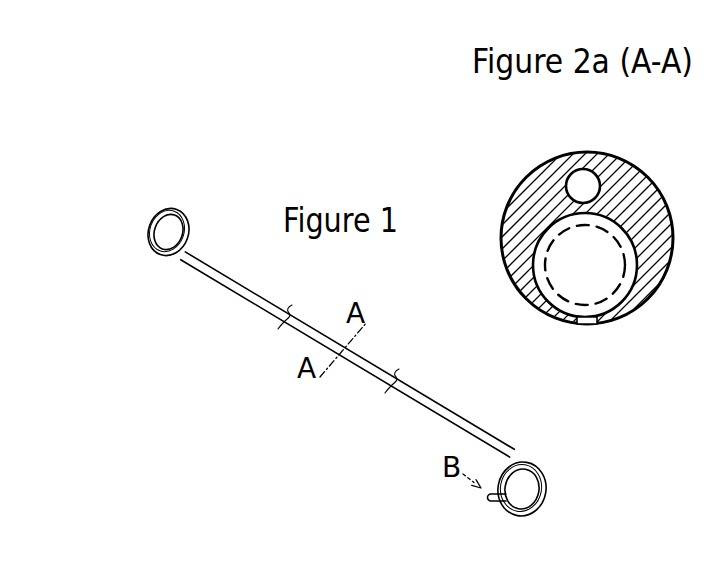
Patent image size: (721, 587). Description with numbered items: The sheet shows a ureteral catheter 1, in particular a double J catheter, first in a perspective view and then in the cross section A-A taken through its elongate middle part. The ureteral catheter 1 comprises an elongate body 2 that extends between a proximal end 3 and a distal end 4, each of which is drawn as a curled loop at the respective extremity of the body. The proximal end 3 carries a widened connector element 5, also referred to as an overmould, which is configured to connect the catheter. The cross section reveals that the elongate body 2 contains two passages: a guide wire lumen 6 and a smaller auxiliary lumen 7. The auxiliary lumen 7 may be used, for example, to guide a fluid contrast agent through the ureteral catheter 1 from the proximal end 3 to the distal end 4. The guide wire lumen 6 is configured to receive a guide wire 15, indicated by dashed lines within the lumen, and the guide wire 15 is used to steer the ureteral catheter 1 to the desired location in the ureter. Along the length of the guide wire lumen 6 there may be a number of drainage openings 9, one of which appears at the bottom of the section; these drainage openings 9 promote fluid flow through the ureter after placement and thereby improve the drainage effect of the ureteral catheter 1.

In FIG. 1, the ureteral catheter 1 is at (308, 435).
In FIG. 1, the elongate body 2 is at (253, 300).
In FIG. 2A, the elongate body 2 is at (627, 207).
In FIG. 1, the proximal end 3 is at (538, 538).
In FIG. 1, the distal end 4 is at (154, 271).
In FIG. 1, the connector element 5 is at (494, 503).
In FIG. 2A, the guide wire lumen 6 is at (513, 280).
In FIG. 2A, the auxiliary lumen 7 is at (568, 172).
In FIG. 2A, the drainage openings 9 is at (587, 325).
In FIG. 2A, the guide wire 15 is at (607, 280).